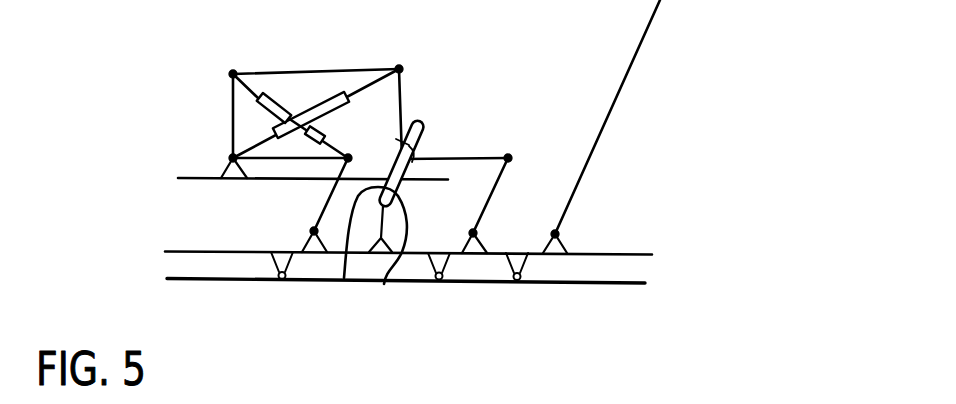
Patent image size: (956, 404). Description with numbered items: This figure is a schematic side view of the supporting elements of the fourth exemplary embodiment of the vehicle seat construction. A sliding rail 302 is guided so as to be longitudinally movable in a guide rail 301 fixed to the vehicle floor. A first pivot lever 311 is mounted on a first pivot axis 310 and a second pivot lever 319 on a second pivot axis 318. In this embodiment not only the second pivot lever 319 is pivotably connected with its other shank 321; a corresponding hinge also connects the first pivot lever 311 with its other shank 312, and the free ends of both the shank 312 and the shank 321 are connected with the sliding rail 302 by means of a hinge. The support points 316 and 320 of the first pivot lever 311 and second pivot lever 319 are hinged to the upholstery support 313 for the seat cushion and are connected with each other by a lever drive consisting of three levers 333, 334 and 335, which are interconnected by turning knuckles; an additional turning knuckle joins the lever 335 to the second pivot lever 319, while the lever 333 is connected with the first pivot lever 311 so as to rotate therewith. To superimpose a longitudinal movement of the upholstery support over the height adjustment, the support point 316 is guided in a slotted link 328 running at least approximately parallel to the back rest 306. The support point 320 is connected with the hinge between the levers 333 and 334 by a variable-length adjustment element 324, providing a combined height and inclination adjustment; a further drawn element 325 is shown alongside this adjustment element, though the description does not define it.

The guide rail 301 is at (606, 283).
The sliding rail 302 is at (606, 252).
The back rest 306 is at (626, 78).
The first pivot axis 310 is at (472, 233).
The first pivot lever 311 is at (488, 158).
The shank 312 is at (484, 221).
The upholstery support 313 is at (178, 178).
The support point 316 is at (384, 284).
The second pivot axis 318 is at (313, 231).
The second pivot lever 319 is at (258, 145).
The support point 320 is at (233, 157).
The shank 321 is at (324, 197).
The variable-length adjustment element 324 is at (342, 114).
The piston rod assembly 325 is at (276, 94).
The slotted link 328 is at (344, 278).
The lever 333 is at (404, 80).
The lever 334 is at (313, 73).
The lever 335 is at (232, 100).